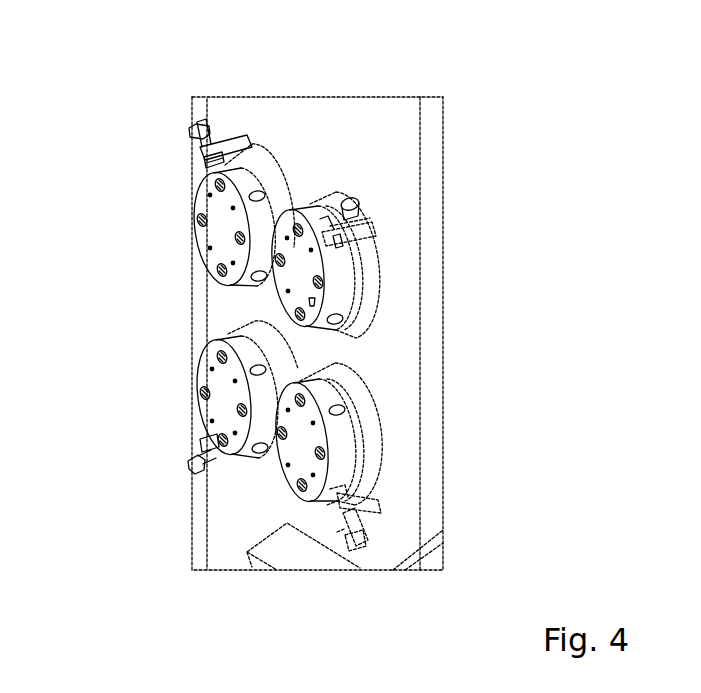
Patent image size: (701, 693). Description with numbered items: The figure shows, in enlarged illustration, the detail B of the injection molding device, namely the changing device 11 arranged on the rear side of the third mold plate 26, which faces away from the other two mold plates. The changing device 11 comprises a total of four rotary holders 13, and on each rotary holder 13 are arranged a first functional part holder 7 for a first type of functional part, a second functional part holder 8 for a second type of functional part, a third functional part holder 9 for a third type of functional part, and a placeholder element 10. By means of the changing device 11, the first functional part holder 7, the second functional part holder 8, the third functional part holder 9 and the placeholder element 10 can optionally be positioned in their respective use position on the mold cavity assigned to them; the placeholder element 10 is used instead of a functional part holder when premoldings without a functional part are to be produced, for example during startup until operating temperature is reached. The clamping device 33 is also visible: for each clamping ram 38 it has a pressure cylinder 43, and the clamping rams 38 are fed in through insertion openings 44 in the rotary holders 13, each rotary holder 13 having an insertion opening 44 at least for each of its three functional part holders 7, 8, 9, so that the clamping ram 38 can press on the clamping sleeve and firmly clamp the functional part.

The changing device 11 is at (148, 267).
The detail B is at (310, 97).
The third mold plate 26 is at (397, 140).
The clamping device 33 is at (254, 112).
The second functional part holder 8 is at (287, 238).
The first functional part holder 7 is at (311, 250).
The third functional part holder 9 is at (288, 291).
The placeholder element 10 is at (315, 302).
The rotary holder 13 is at (375, 293).
The pressure cylinder 43 is at (356, 204).
The clamping ram 38 is at (335, 238).
The insertion opening 44 is at (340, 247).